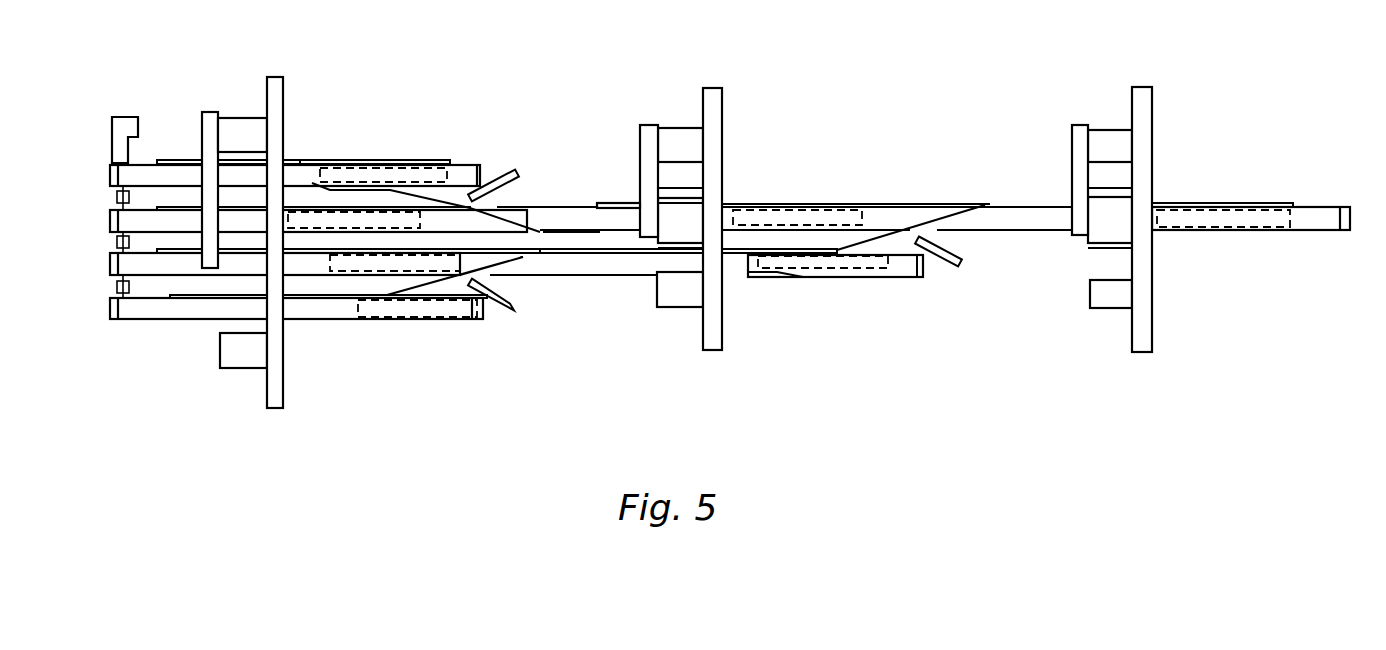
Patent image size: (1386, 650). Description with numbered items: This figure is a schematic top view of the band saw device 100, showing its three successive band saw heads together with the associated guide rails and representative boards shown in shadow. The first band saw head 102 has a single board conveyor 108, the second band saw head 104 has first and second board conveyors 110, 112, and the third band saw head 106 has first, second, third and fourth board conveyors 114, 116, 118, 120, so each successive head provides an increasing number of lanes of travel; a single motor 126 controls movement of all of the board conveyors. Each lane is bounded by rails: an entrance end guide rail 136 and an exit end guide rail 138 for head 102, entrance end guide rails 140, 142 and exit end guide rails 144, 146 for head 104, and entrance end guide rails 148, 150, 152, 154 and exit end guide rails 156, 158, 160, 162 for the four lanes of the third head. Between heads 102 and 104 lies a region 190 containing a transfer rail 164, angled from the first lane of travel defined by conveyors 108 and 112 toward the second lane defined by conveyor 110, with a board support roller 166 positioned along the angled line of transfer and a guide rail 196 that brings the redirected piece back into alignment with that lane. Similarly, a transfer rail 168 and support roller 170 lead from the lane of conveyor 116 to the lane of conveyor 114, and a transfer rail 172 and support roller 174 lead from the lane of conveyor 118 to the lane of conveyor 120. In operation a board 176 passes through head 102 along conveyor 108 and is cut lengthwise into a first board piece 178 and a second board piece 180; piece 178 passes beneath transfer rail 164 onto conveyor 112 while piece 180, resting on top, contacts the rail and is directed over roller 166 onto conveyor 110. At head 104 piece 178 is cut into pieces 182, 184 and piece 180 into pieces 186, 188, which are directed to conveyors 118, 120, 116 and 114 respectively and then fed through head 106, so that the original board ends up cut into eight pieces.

The band saw device 100 is at (721, 244).
The first band saw head 102 is at (1145, 353).
The second band saw head 104 is at (715, 350).
The third band saw head 106 is at (277, 408).
The board conveyor 108 is at (1325, 233).
The first board conveyor 110 is at (920, 280).
The second board conveyor 112 is at (883, 198).
The first board conveyor 114 is at (472, 323).
The second board conveyor 116 is at (500, 283).
The third board conveyor 118 is at (517, 197).
The fourth board conveyor 120 is at (467, 160).
The motor 126 is at (110, 133).
The entrance end guide rail 136 is at (1187, 203).
The exit end guide rail 138 is at (1042, 203).
The entrance end guide rail 140 is at (748, 275).
The entrance end guide rail 142 is at (743, 205).
The exit end guide rail 144 is at (648, 252).
The exit end guide rail 146 is at (613, 203).
The entrance end guide rail 148 is at (297, 300).
The entrance end guide rail 150 is at (315, 253).
The entrance end guide rail 152 is at (296, 160).
The entrance end guide rail 154 is at (312, 160).
The exit end guide rail 156 is at (197, 297).
The exit end guide rail 158 is at (177, 252).
The exit end guide rail 160 is at (177, 207).
The exit end guide rail 162 is at (167, 158).
The transfer rail 164 is at (948, 217).
The board support roller 166 is at (955, 265).
The transfer rail 168 is at (523, 257).
The support roller 170 is at (503, 307).
The transfer rail 172 is at (520, 220).
The support roller 174 is at (503, 177).
The board 176 is at (1253, 227).
The first board piece 178 is at (807, 220).
The second board piece 180 is at (860, 265).
The board piece 182 is at (347, 210).
The board piece 184 is at (400, 177).
The board piece 186 is at (347, 260).
The board piece 188 is at (423, 307).
The region 190 is at (970, 338).
The guide rail 196 is at (848, 278).